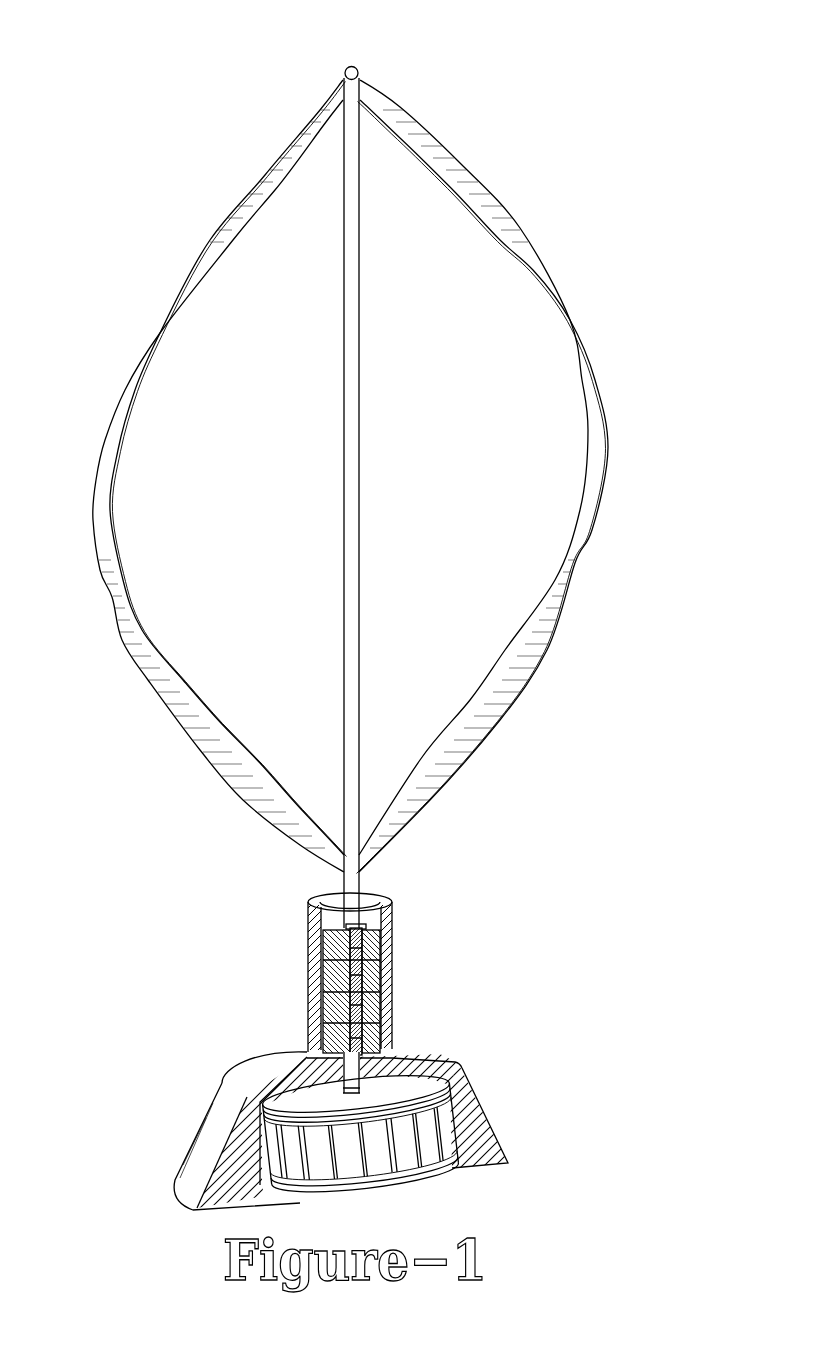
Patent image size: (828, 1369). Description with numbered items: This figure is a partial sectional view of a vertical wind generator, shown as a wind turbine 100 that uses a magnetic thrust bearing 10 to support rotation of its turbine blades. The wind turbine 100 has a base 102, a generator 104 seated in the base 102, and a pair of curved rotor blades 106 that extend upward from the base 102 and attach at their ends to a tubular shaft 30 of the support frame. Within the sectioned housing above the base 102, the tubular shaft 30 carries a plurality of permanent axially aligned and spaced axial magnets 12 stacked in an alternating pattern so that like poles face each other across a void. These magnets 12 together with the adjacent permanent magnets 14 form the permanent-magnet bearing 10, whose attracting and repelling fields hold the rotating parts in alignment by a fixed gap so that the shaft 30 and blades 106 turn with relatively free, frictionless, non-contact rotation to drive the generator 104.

The wind turbine 100 is at (124, 202).
The rotor blades 106 is at (573, 563).
The tubular shaft 30 is at (358, 440).
The magnetic thrust bearing 10 is at (358, 974).
The permanent magnet 14 is at (373, 978).
The axial magnets 12 is at (355, 945).
The base 102 is at (243, 1076).
The generator 104 is at (420, 1142).